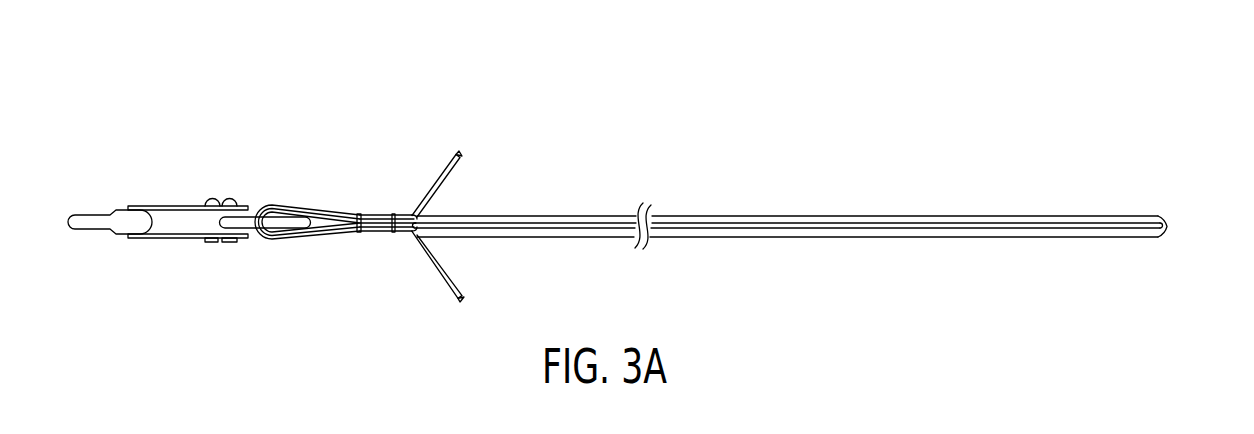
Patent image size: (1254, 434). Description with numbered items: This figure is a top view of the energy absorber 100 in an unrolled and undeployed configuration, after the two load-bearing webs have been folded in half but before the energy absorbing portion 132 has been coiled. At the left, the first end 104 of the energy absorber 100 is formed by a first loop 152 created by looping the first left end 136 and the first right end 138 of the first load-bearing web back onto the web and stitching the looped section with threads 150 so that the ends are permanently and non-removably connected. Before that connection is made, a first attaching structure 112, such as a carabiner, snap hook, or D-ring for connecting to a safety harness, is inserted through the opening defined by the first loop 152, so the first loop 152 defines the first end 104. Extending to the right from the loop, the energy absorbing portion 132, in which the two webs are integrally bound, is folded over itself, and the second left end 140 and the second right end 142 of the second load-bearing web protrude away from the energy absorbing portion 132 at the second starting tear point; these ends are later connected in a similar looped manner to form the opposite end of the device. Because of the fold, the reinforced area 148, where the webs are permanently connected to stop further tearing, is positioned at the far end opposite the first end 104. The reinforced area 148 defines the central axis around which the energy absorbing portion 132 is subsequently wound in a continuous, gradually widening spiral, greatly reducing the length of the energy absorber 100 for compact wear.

The energy absorber 100 is at (1031, 110).
The first end 104 is at (143, 186).
The first attaching structure 112 is at (118, 227).
The energy absorbing portion 132 is at (824, 205).
The first left end 136 is at (275, 242).
The first right end 138 is at (450, 268).
The second left end 140 is at (318, 227).
The second right end 142 is at (455, 172).
The reinforced area 148 is at (1170, 226).
The threads 150 is at (387, 214).
The first loop 152 is at (263, 207).